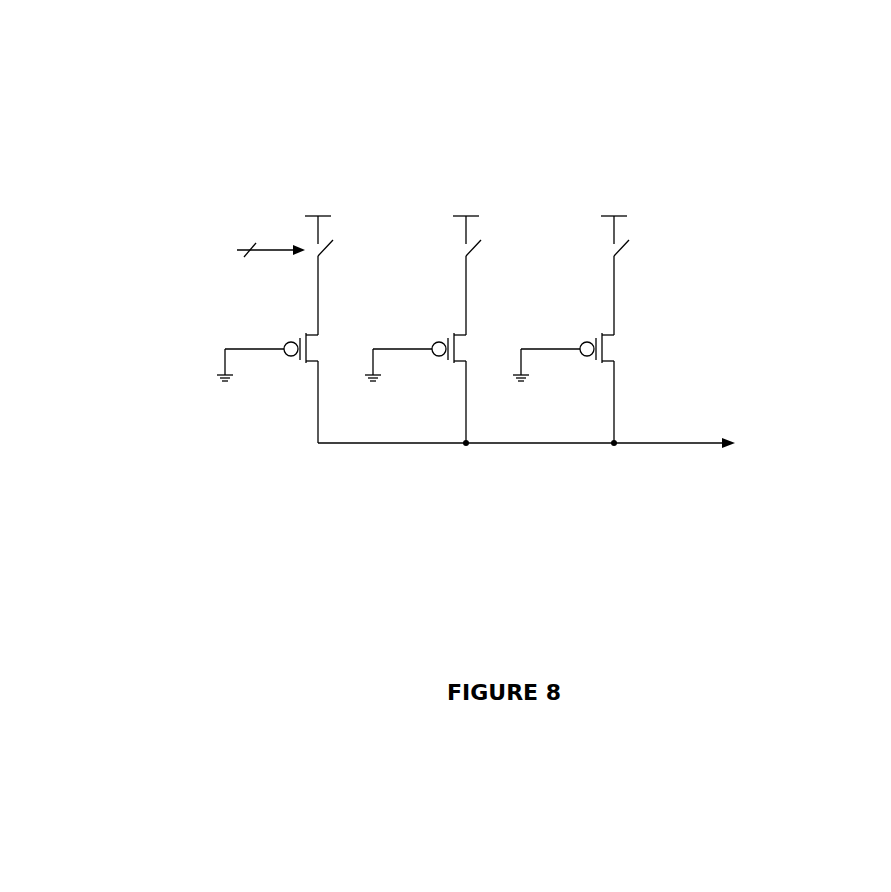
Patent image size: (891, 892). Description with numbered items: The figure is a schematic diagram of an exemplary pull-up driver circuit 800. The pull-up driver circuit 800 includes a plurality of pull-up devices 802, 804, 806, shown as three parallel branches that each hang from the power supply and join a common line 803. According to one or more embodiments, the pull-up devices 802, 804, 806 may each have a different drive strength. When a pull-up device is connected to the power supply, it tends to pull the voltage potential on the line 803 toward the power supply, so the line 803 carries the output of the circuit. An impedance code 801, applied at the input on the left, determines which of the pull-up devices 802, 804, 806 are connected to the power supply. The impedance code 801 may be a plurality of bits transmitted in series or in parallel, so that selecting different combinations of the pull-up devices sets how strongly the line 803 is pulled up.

The pull-up driver circuit 800 is at (818, 114).
The impedance code 801 is at (279, 247).
The pull-up device 802 is at (291, 359).
The line 803 is at (693, 442).
The pull-up device 804 is at (439, 359).
The pull-up device 806 is at (587, 359).